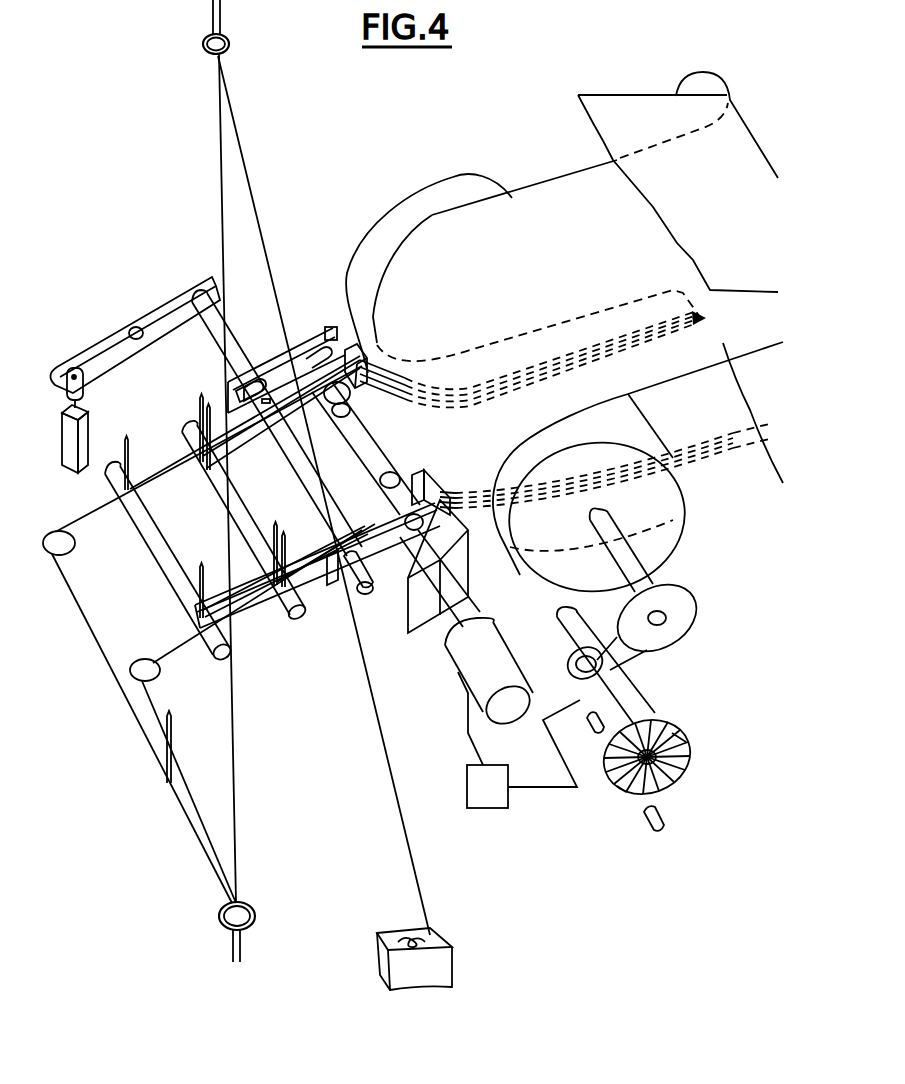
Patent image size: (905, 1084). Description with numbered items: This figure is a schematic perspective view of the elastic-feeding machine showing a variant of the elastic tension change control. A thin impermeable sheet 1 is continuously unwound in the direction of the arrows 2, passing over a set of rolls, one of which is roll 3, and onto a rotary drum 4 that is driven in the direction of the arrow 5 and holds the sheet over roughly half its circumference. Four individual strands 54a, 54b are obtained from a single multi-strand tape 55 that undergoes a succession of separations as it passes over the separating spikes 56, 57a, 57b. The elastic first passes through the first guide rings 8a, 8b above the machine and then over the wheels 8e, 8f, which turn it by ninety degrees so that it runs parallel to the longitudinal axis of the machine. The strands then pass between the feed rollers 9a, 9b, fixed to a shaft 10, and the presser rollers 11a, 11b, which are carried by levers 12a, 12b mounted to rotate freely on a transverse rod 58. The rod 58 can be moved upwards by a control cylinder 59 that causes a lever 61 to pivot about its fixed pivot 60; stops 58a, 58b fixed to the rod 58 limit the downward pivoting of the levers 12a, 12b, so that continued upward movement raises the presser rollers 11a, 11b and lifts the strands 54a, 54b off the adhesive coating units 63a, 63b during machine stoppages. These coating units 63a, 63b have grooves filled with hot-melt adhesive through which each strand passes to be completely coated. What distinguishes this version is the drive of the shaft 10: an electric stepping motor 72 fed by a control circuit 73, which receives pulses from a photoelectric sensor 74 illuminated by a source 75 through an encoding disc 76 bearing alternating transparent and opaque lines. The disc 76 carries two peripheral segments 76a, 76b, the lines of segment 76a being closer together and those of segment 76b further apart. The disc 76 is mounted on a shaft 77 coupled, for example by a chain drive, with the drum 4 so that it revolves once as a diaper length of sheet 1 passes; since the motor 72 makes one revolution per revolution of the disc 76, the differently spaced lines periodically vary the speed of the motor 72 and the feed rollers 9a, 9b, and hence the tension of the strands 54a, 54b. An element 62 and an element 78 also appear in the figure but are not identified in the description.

The thin impermeable sheet 1 is at (535, 208).
The arrows 2 is at (602, 238).
The roll 3 is at (692, 84).
The rotary drum 4 is at (398, 217).
The arrow 5 is at (598, 566).
The first guide ring 8a is at (203, 46).
The first guide ring 8b is at (219, 922).
The wheel 8e is at (73, 543).
The wheel 8f is at (160, 673).
The rotary feed roller 9a is at (296, 348).
The feed roller 9b is at (418, 442).
The shaft 10 is at (446, 633).
The friction roller 11a is at (320, 348).
The presser roller 11b is at (428, 452).
The lever 12a is at (262, 383).
The lever 12b is at (333, 588).
The individual strand 54a is at (376, 350).
The individual strand 54b is at (460, 478).
The multi-strand tape 55 is at (390, 792).
The separating spike 56 is at (169, 745).
The separating spike 57a is at (197, 405).
The separating spike 57b is at (273, 525).
The transverse rod 58 is at (208, 346).
The stop 58a is at (273, 372).
The stop 58b is at (368, 598).
The control cylinder 59 is at (84, 432).
The fixed pivot 60 is at (137, 326).
The lever 61 is at (110, 355).
The connecting rod 62 is at (398, 433).
The adhesive coating unit 63a is at (366, 342).
The adhesive coating unit 63b is at (462, 543).
The electric stepping motor 72 is at (473, 657).
The control circuit 73 is at (482, 788).
The photoelectric receiver or sensor 74 is at (597, 728).
The source 75 is at (650, 823).
The encoding disc 76 is at (691, 752).
The segment 76a is at (673, 732).
The segment 76b is at (620, 792).
The shaft 77 is at (615, 703).
The drive pulley 78 is at (652, 663).